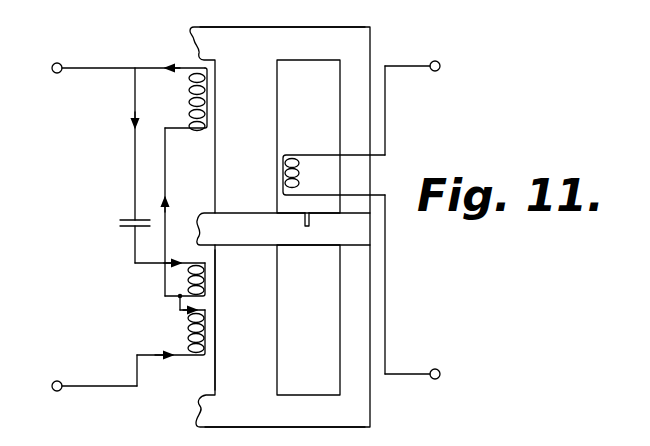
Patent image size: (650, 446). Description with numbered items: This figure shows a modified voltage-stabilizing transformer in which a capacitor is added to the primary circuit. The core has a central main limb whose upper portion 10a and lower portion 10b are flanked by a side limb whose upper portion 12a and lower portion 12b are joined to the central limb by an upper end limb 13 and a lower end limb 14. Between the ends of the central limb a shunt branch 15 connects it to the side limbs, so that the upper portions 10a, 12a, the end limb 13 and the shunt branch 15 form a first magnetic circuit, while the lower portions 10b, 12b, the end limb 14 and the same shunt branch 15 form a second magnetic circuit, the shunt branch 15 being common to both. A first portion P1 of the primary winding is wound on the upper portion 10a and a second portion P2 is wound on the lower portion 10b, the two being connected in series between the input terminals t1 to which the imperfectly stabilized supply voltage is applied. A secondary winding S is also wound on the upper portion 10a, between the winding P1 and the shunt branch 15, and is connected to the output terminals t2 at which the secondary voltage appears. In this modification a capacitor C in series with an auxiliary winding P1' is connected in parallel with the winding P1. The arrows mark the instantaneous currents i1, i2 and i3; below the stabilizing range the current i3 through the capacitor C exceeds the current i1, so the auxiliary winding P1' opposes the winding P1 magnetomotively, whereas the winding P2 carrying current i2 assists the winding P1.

The upper portion of central limb 10a is at (253, 144).
The lower portion of central limb 10b is at (235, 320).
The upper portion of side limb 12a is at (358, 110).
The lower portion of side limb 12b is at (358, 317).
The end limb 13 is at (282, 41).
The end limb 14 is at (285, 417).
The shunt branch 15 is at (262, 240).
The first portion of primary winding P1 is at (206, 99).
The auxiliary winding P1' is at (208, 278).
The second portion of primary winding P2 is at (208, 340).
The secondary winding S is at (284, 172).
The capacitor C is at (122, 223).
The terminals t1 is at (52, 217).
The terminals t2 is at (444, 217).
The current i1 is at (173, 128).
The current i2 is at (175, 347).
The current i3 is at (145, 187).